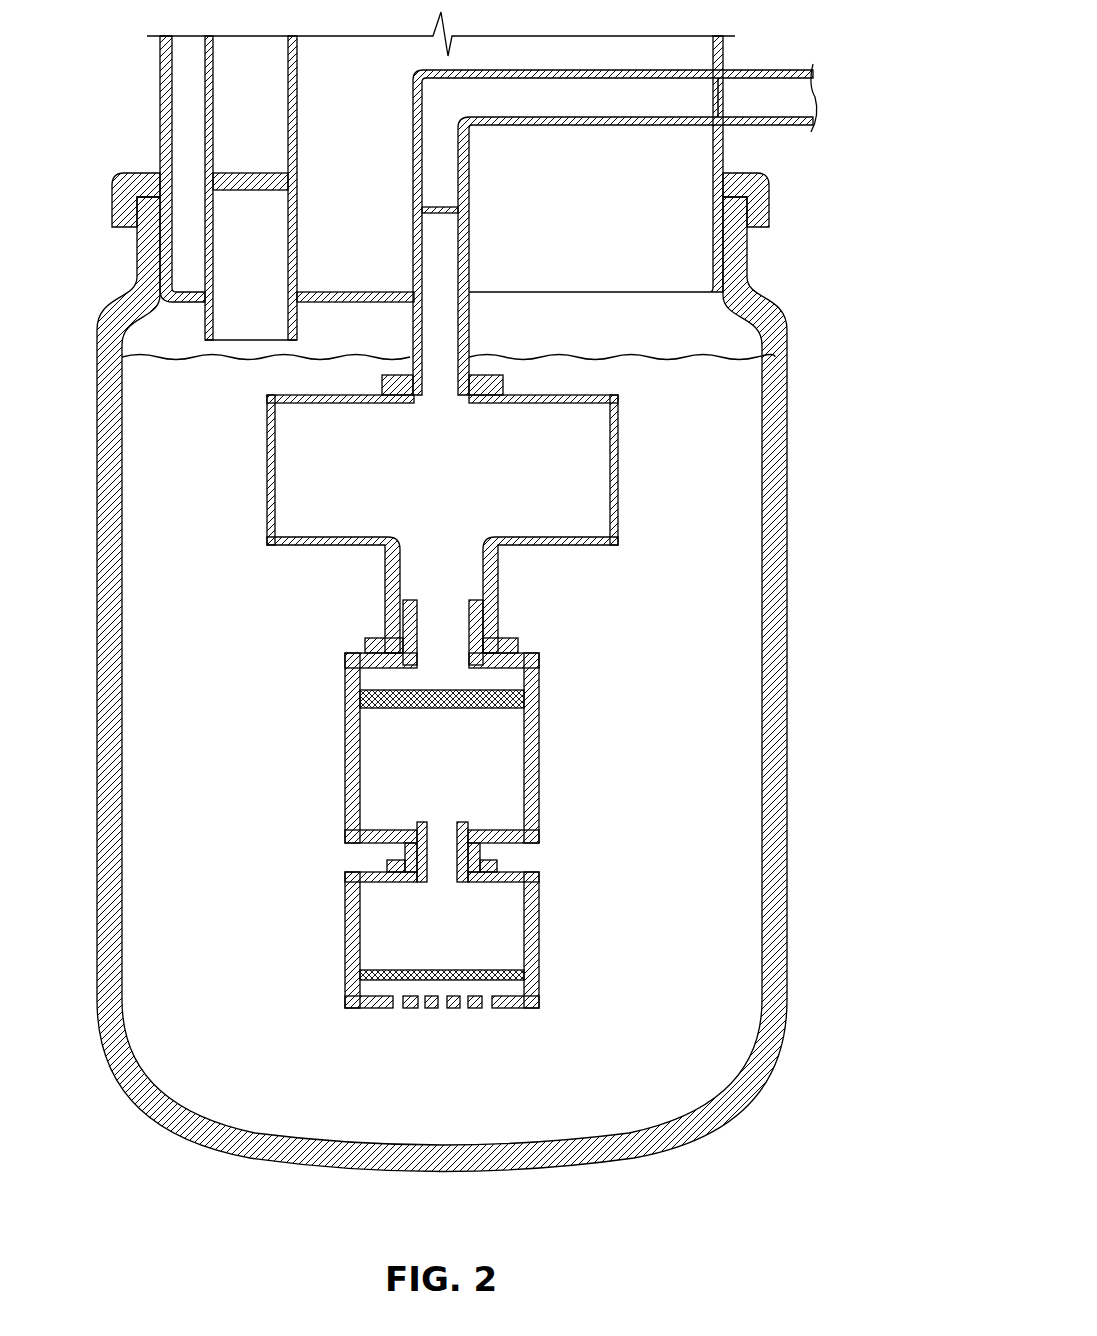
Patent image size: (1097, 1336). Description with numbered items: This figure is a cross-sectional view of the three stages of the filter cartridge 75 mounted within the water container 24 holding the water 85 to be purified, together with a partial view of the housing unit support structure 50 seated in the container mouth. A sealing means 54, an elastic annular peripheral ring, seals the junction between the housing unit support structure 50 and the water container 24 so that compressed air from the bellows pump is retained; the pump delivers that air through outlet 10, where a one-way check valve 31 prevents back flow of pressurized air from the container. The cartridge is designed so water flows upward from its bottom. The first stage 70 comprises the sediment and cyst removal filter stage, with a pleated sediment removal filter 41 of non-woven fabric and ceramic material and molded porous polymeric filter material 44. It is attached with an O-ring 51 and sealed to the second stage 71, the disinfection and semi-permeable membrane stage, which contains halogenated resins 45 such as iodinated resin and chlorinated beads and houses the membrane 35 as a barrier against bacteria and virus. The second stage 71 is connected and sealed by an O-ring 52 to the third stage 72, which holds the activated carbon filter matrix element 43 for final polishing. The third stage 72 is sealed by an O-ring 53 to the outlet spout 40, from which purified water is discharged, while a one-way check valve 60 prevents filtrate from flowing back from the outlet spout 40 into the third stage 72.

The outlet of air pump 10 is at (251, 188).
The water container 24 is at (135, 257).
The one-way check valve 31 is at (268, 172).
The membrane 35 is at (425, 690).
The outlet spout 40 is at (563, 70).
The sediment removal filter 41 is at (365, 975).
The activated carbon filter matrix element 43 is at (442, 524).
The molded porous polymeric filter material 44 is at (442, 940).
The halogenated resins 45 is at (442, 767).
The housing unit support structure 50 is at (160, 125).
The O-ring 51 is at (500, 868).
The O-ring 52 is at (518, 650).
The O-ring 53 is at (505, 378).
The sealing means 54 is at (110, 205).
The one-way check valve 60 is at (440, 207).
The first stage 70 is at (607, 851).
The second stage 71 is at (607, 670).
The third stage 72 is at (621, 397).
The filter cartridge 75 is at (664, 397).
The water 85 is at (644, 332).